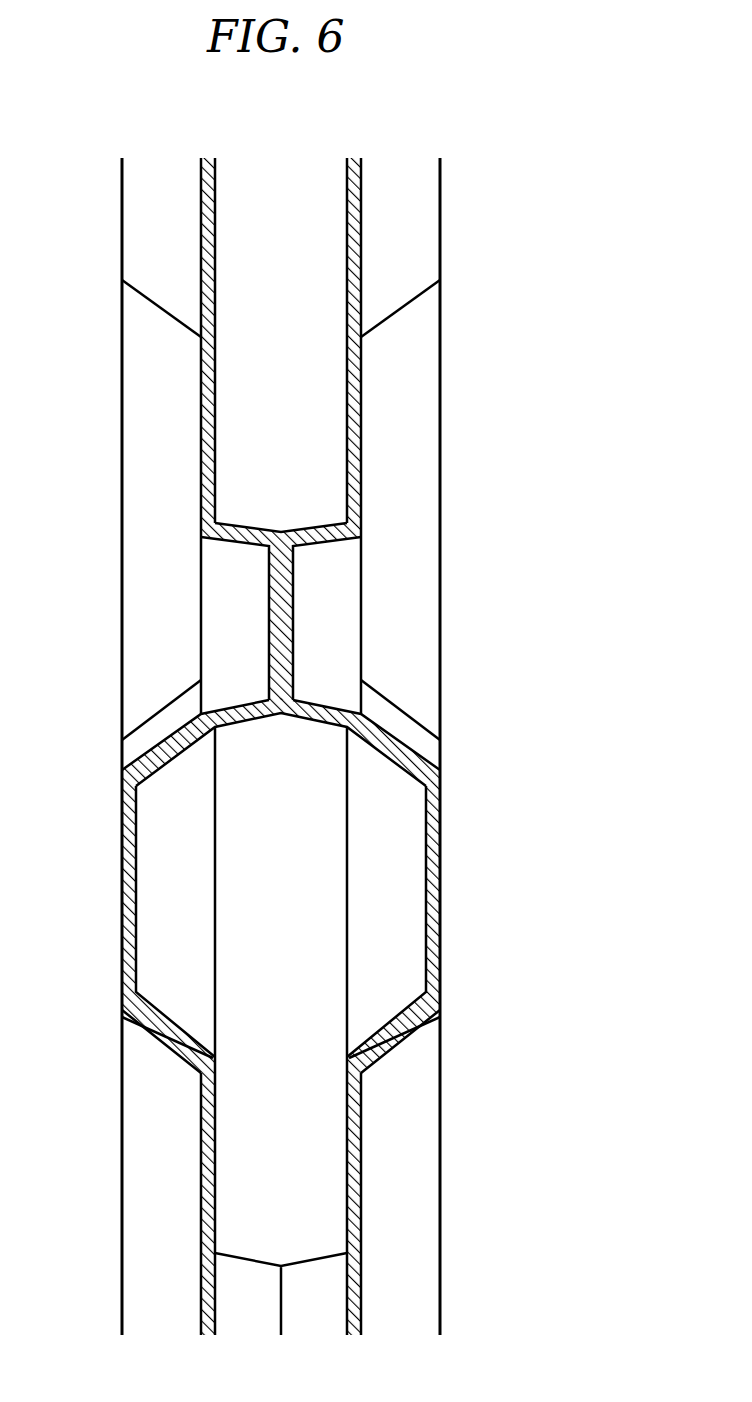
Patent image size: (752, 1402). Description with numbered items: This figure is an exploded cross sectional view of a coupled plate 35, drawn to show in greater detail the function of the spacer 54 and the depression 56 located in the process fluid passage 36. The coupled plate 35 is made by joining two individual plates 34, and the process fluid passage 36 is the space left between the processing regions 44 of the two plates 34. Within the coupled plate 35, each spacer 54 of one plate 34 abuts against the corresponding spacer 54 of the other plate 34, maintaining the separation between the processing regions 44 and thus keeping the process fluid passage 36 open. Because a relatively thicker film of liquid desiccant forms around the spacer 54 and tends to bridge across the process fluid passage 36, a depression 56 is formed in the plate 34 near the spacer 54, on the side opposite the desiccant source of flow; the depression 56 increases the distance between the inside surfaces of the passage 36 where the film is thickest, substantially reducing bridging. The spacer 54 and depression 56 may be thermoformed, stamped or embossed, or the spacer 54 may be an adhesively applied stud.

The plate 34 is at (192, 236).
The coupled plate 35 is at (572, 438).
The process fluid passage 36 is at (310, 402).
The processing region 44 is at (347, 217).
The spacer 54 is at (270, 533).
The depression 56 is at (165, 898).